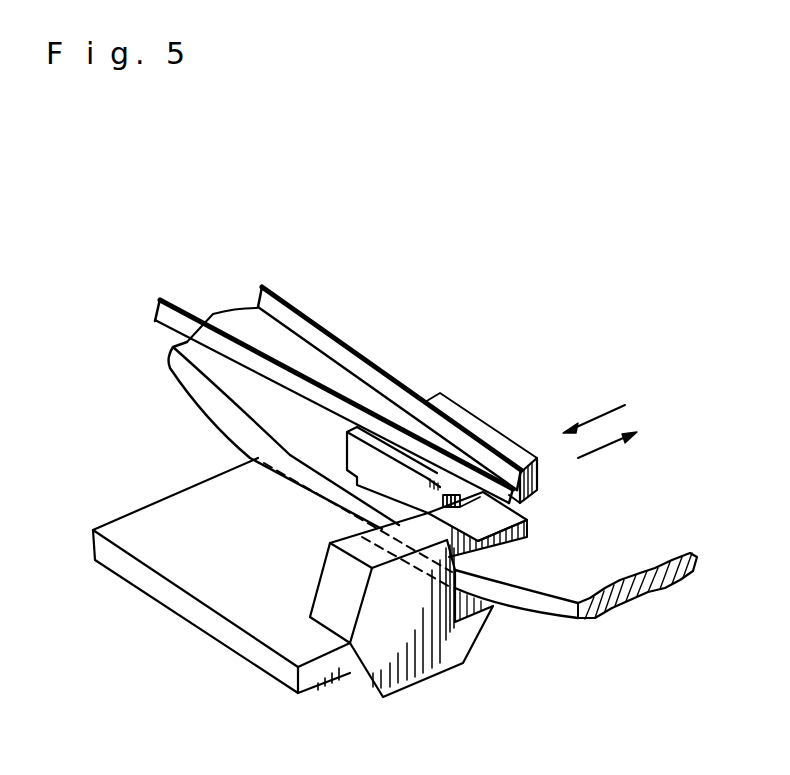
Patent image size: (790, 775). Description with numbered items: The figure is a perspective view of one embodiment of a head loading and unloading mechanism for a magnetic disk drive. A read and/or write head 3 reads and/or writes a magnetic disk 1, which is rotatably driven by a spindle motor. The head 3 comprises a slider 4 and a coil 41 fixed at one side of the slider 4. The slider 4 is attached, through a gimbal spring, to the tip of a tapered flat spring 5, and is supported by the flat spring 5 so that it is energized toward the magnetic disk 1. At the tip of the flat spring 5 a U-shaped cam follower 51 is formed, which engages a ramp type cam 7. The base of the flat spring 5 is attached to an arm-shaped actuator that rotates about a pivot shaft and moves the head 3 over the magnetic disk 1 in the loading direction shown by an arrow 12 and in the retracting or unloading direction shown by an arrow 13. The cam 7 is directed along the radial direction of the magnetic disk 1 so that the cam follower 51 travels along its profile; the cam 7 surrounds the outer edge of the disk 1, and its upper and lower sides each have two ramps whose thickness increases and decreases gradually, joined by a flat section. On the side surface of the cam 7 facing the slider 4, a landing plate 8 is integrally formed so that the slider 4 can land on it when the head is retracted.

The magnetic disk 1 is at (627, 593).
The read and/or write head 3 is at (440, 393).
The slider 4 is at (493, 428).
The coil 41 is at (445, 492).
The tapered flat spring 5 is at (357, 352).
The U-shaped cam follower 51 is at (538, 493).
The ramp type cam 7 is at (437, 563).
The landing plate 8 is at (250, 613).
The arrow showing loading direction 12 is at (605, 450).
The arrow showing retracting direction 13 is at (597, 413).